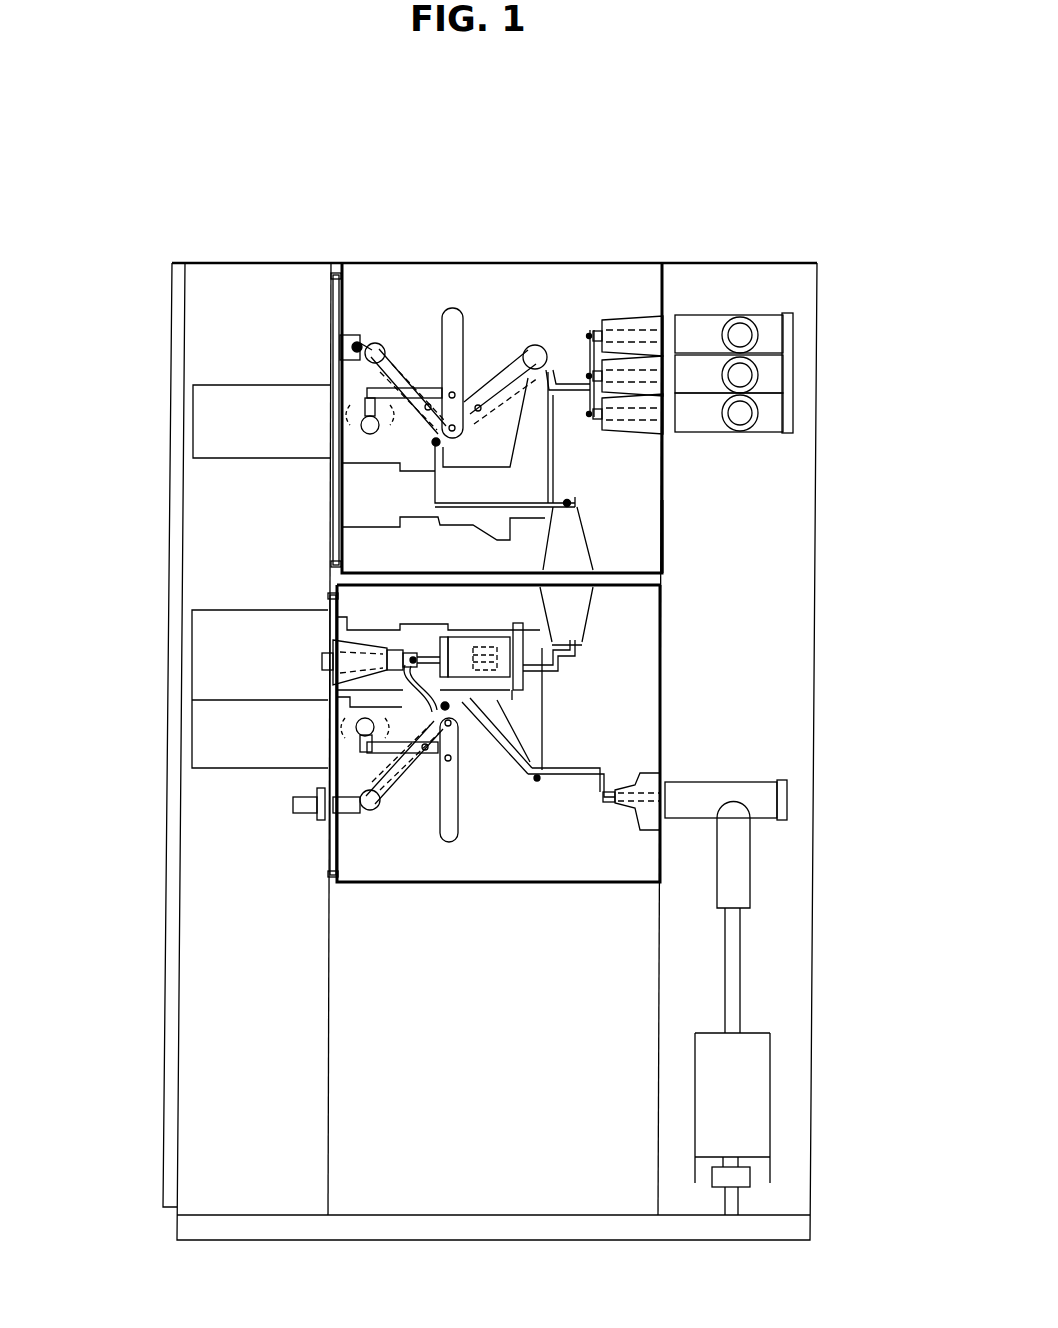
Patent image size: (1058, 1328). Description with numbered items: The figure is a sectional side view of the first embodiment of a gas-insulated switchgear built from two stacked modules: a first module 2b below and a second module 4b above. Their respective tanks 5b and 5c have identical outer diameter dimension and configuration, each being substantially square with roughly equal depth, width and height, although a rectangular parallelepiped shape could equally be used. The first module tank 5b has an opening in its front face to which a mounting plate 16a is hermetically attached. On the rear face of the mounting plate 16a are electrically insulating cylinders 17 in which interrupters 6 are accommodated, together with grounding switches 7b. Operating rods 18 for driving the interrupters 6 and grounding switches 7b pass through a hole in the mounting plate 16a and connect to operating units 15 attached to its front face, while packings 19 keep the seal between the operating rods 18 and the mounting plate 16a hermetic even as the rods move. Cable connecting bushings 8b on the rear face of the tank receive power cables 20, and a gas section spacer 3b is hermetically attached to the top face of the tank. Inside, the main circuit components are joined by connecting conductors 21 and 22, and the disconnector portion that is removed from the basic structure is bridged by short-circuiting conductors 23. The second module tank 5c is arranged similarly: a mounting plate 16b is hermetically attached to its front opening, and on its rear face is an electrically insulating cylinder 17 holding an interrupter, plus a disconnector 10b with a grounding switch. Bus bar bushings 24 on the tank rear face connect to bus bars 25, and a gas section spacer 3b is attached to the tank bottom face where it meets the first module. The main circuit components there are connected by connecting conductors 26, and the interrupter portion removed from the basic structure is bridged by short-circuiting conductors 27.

The first module 2b is at (667, 710).
The gas section spacer 3b is at (623, 578).
The second module 4b is at (668, 535).
The first module tank 5b is at (665, 623).
The second module tank 5c is at (668, 487).
The interrupter 6 is at (473, 652).
The grounding switch 7b is at (445, 847).
The cable connecting bushing 8b is at (667, 782).
The disconnector 10b is at (465, 348).
The operating unit 15 is at (223, 732).
The mounting plate 16a is at (320, 842).
The mounting plate 16b is at (327, 517).
The electrically insulating cylinder 17 is at (480, 525).
The operating rod 18 is at (325, 660).
The packing 19 is at (323, 647).
The power cable 20 is at (743, 985).
The connecting conductor 21 is at (567, 778).
The connecting conductor 22 is at (563, 667).
The short-circuiting conductor 23 is at (498, 767).
The bus bar bushing 24 is at (670, 318).
The bus bar 25 is at (740, 322).
The connecting conductor 26 is at (571, 385).
The short-circuiting conductor 27 is at (557, 500).